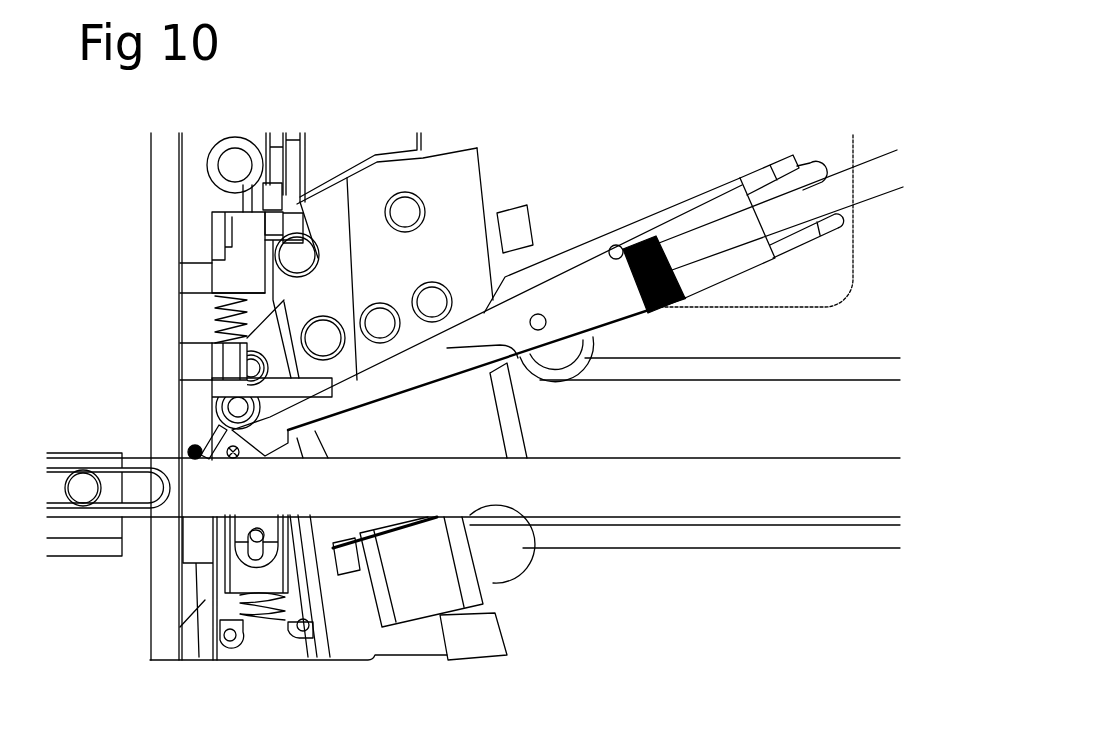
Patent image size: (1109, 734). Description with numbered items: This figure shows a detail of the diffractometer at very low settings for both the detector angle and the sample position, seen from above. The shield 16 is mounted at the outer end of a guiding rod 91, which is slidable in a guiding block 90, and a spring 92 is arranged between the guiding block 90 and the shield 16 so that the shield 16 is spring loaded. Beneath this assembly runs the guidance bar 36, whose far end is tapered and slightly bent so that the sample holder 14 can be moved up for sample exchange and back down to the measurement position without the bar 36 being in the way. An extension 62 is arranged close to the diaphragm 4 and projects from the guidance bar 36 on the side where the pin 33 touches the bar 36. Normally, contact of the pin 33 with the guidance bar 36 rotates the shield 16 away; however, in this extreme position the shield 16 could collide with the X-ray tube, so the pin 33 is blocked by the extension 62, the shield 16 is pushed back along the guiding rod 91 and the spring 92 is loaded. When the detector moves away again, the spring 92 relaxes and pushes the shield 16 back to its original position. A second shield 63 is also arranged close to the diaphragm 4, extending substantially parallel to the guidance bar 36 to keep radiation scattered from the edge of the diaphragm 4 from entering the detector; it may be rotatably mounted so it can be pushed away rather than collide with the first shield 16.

The diaphragm 4 is at (193, 540).
The sample holder 14 is at (262, 632).
The shield 16 is at (518, 360).
The pin 33 is at (236, 442).
The guidance bar 36 is at (606, 485).
The extension 62 is at (200, 440).
The second shield 63 is at (279, 386).
The guiding block 90 is at (697, 226).
The guiding rod 91 is at (876, 159).
The spring 92 is at (667, 300).